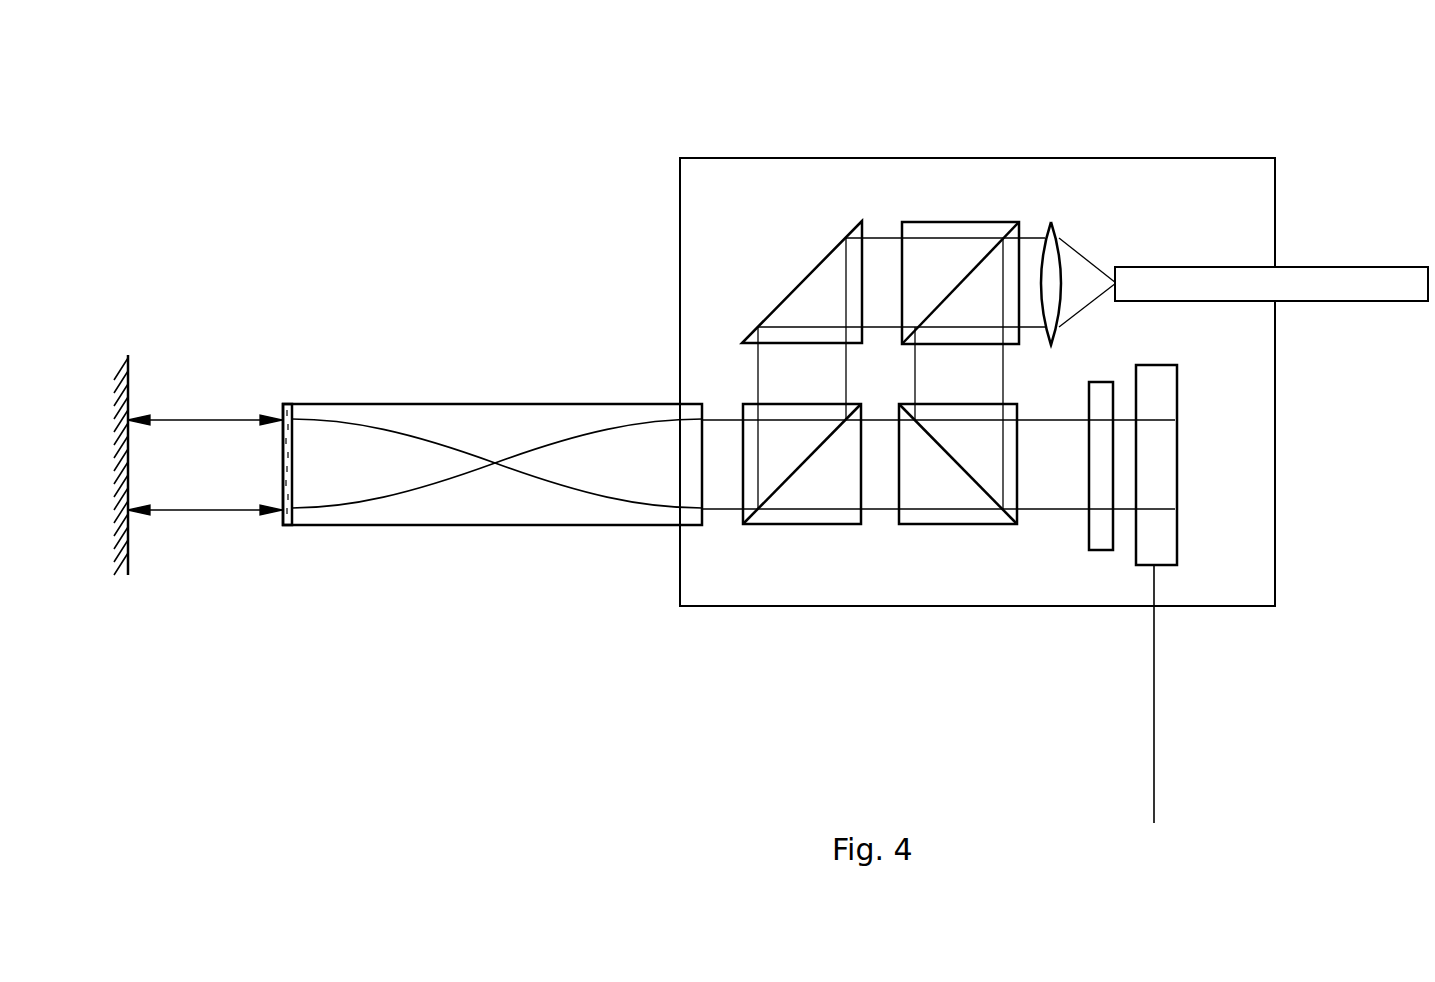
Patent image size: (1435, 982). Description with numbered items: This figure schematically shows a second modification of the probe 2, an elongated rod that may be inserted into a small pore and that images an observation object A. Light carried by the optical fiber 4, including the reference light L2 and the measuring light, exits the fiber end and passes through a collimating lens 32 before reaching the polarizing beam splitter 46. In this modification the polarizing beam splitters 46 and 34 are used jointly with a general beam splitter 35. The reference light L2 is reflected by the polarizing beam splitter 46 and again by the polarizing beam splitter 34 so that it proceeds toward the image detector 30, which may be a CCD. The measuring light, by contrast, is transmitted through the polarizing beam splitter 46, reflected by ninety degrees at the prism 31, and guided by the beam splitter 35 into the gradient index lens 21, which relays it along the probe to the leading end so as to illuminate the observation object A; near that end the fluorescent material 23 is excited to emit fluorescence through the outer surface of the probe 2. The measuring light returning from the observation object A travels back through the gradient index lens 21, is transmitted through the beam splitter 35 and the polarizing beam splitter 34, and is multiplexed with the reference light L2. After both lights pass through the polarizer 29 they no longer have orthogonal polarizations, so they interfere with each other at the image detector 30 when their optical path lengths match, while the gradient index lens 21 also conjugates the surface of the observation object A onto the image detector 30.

The probe 2 is at (718, 112).
The optical fiber 4 is at (1357, 267).
The gradient index lens 21 is at (572, 403).
The fluorescent material 23 is at (283, 404).
The polarizer 29 is at (1100, 553).
The image detector 30 is at (1179, 430).
The prism 31 is at (803, 273).
The collimating lens 32 is at (1062, 233).
The polarizing beam splitter 34 is at (910, 528).
The beam splitter 35 is at (805, 528).
The polarizing beam splitter 46 is at (975, 221).
The observation object A is at (132, 388).
The reference light L2 is at (1003, 377).